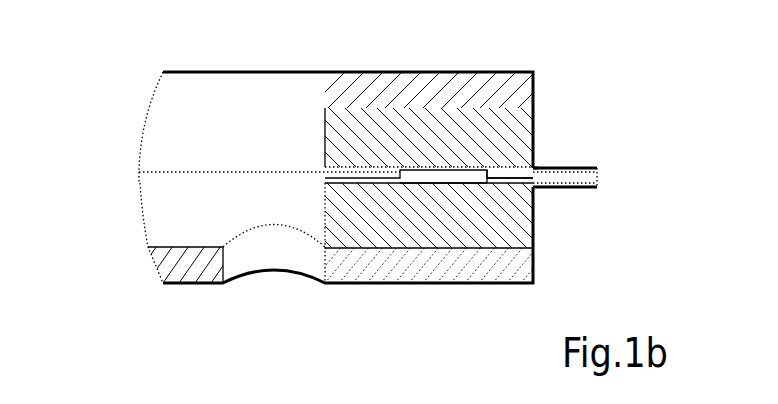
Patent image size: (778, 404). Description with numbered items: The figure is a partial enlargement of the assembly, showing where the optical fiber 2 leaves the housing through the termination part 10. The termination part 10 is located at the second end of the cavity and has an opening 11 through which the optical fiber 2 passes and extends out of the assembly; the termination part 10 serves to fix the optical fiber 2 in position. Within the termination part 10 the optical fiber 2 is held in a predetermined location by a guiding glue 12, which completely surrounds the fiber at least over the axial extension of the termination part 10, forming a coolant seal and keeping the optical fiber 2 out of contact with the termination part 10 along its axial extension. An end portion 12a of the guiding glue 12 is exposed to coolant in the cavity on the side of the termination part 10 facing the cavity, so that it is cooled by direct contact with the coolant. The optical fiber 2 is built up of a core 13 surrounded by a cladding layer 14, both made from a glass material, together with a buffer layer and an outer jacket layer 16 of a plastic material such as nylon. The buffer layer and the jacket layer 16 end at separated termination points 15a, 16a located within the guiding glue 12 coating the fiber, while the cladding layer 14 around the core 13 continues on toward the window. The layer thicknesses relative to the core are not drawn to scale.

The termination part 10 is at (520, 116).
The opening 11 is at (540, 161).
The optical fiber 2 is at (606, 174).
The jacket layer 16 is at (535, 178).
The termination point of the buffer layer 15a is at (400, 178).
The termination point of the jacket layer 16a is at (487, 175).
The guiding glue 12 is at (355, 186).
The end portion of the guiding glue 12a is at (325, 183).
The core 13 is at (79, 239).
The cladding layer 14 is at (142, 183).